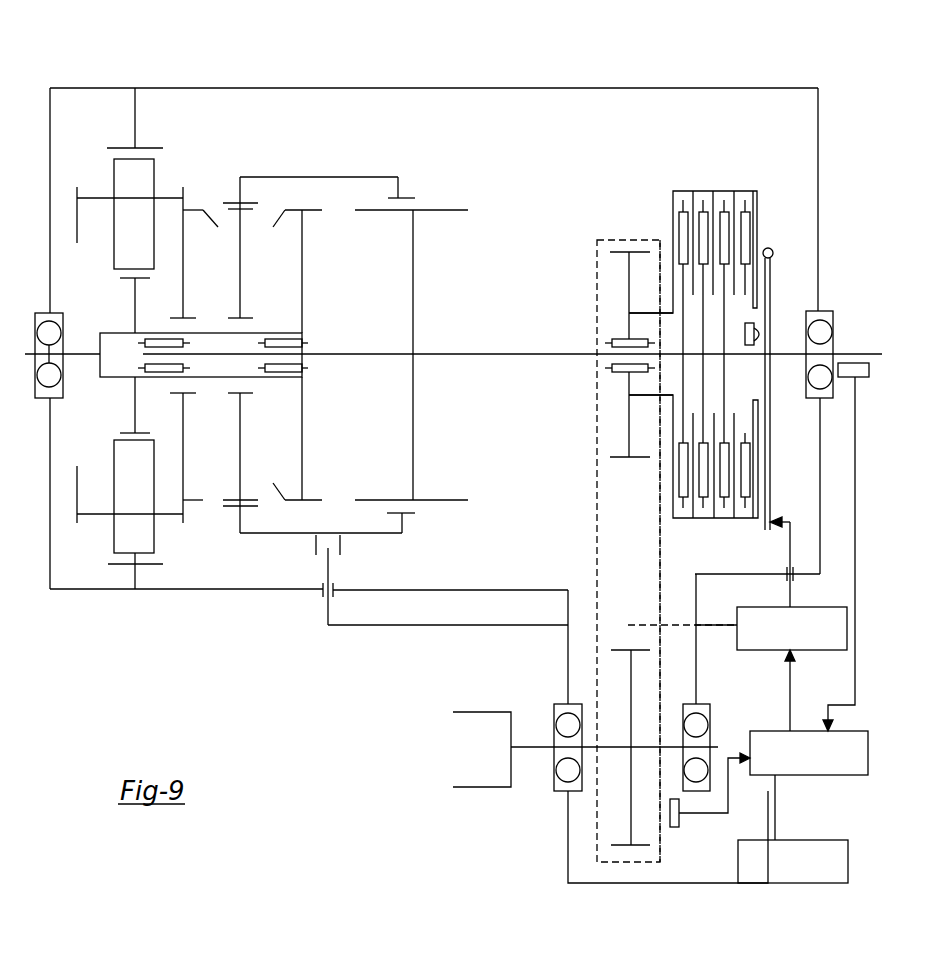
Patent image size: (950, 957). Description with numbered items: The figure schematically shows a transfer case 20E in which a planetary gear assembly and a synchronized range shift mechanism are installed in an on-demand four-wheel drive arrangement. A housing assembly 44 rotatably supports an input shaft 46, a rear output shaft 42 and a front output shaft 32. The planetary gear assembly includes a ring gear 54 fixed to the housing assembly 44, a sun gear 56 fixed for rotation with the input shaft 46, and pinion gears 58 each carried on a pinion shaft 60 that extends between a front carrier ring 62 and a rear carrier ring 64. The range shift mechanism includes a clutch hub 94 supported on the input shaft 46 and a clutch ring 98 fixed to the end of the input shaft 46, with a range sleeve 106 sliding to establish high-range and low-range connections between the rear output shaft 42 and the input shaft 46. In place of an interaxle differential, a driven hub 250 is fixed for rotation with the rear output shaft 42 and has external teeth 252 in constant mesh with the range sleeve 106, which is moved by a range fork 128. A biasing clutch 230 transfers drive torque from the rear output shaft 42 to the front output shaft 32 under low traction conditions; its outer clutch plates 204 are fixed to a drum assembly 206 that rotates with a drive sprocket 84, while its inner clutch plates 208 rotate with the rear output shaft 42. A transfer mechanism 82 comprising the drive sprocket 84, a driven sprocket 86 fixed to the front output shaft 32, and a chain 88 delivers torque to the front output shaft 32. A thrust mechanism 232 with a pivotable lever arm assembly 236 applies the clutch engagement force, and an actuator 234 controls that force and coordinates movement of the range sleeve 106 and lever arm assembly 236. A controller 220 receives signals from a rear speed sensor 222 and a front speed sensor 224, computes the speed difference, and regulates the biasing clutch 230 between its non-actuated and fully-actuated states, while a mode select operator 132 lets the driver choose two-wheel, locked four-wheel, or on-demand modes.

The transfer case 20E is at (700, 62).
The housing assembly 44 is at (800, 88).
The ring gear 54 is at (135, 125).
The pinion gears 58 is at (147, 175).
The pinion shaft 60 is at (95, 196).
The front carrier ring 62 is at (77, 224).
The sun gear 56 is at (134, 302).
The rear carrier ring 64 is at (210, 250).
The clutch hub 94 is at (240, 282).
The range sleeve 106 is at (278, 177).
The clutch ring 98 is at (302, 298).
The external teeth 252 is at (392, 208).
The driven hub 250 is at (413, 275).
The input shaft 46 is at (82, 362).
The range fork 128 is at (333, 566).
The chain 88 is at (597, 574).
The transfer mechanism 82 is at (662, 596).
The drive sprocket 84 is at (629, 292).
The driven sprocket 86 is at (631, 672).
The front output shaft 32 is at (538, 748).
The biasing clutch 230 is at (722, 313).
The outer clutch plates 204 is at (732, 200).
The drum assembly 206 is at (702, 194).
The inner clutch plates 208 is at (745, 440).
The thrust mechanism 232 is at (776, 302).
The pivotable lever arm assembly 236 is at (792, 498).
The rear output shaft 42 is at (782, 354).
The rear speed sensor 222 is at (869, 372).
The front speed sensor 224 is at (676, 827).
The actuator 234 is at (810, 652).
The controller 220 is at (820, 776).
The mode select operator 132 is at (846, 884).